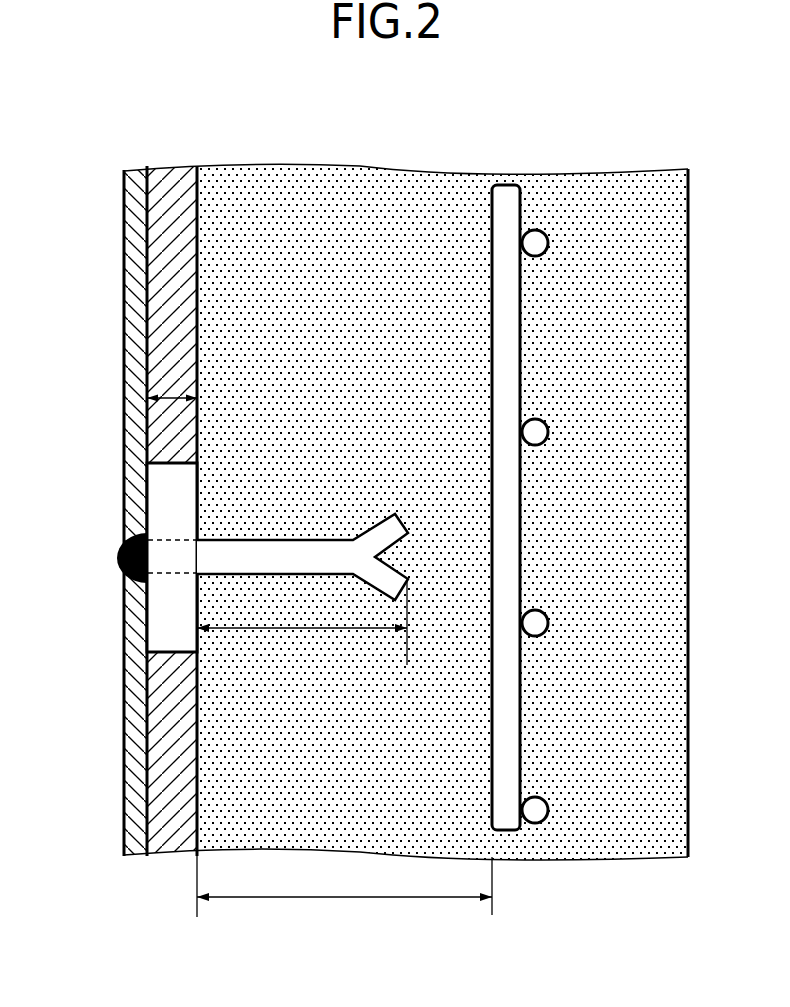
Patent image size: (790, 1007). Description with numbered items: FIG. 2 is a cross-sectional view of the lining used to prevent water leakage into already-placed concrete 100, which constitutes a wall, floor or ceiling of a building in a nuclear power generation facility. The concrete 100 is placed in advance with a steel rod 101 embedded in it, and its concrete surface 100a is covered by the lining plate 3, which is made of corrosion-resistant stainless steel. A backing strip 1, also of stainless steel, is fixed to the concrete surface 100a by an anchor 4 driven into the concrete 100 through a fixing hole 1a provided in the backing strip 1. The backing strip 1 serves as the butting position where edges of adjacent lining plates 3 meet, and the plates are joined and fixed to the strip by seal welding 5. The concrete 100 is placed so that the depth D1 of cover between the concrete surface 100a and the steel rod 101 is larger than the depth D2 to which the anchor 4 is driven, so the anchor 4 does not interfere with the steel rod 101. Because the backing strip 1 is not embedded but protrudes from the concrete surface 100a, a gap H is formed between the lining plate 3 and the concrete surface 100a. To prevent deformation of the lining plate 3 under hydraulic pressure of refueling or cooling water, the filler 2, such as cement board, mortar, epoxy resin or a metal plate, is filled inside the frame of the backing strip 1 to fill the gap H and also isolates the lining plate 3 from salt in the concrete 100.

The backing strip 1 is at (158, 632).
The fixing hole 1a is at (170, 576).
The filler 2 is at (165, 284).
The lining plate 3 is at (130, 324).
The anchor 4 is at (258, 548).
The seal welding 5 is at (118, 555).
The already-placed concrete 100 is at (383, 188).
The concrete surface 100a is at (192, 195).
The steel rod 101 is at (533, 231).
The gap H is at (178, 397).
The depth of cover D1 is at (348, 898).
The depth to which the anchor is driven D2 is at (288, 632).